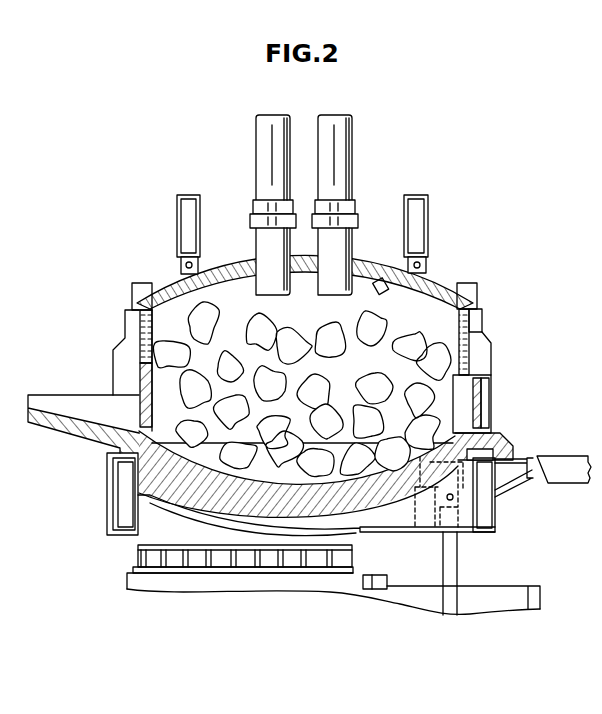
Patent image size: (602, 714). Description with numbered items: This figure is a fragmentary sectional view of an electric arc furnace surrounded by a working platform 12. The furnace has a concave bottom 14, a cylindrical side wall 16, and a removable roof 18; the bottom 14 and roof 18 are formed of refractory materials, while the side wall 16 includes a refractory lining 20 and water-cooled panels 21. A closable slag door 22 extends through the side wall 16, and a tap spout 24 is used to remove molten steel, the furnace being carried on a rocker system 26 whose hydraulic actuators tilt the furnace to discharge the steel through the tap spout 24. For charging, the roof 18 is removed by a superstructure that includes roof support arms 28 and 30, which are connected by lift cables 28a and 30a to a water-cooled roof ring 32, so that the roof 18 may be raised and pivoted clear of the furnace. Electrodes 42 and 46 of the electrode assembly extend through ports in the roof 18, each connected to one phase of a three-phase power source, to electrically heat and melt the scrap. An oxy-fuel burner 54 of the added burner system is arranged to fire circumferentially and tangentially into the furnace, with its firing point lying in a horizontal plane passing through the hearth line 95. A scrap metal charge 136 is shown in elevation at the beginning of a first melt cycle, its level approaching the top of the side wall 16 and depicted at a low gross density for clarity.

The working platform 12 is at (565, 476).
The concave bottom 14 is at (370, 497).
The cylindrical side wall 16 is at (133, 341).
The removable roof 18 is at (178, 290).
The refractory lining 20 is at (145, 385).
The water-cooled panels 21 is at (140, 341).
The closable slag door 22 is at (478, 385).
The tap spout 24 is at (60, 408).
The rocker system 26 is at (186, 529).
The roof support arm 28 is at (418, 215).
The lift cable 28a is at (425, 265).
The roof support arm 30 is at (188, 215).
The lift cable 30a is at (183, 262).
The water-cooled roof ring 32 is at (474, 292).
The electrode 42 is at (333, 150).
The electrode 46 is at (268, 140).
The oxy-fuel burner 54 is at (390, 293).
The hearth line 95 is at (452, 433).
The scrap metal charge 136 is at (450, 358).